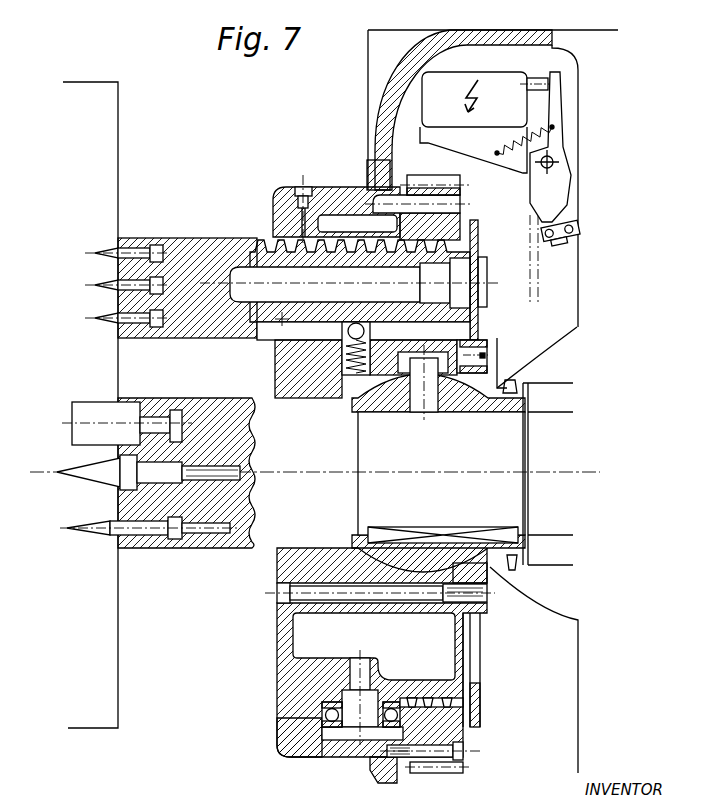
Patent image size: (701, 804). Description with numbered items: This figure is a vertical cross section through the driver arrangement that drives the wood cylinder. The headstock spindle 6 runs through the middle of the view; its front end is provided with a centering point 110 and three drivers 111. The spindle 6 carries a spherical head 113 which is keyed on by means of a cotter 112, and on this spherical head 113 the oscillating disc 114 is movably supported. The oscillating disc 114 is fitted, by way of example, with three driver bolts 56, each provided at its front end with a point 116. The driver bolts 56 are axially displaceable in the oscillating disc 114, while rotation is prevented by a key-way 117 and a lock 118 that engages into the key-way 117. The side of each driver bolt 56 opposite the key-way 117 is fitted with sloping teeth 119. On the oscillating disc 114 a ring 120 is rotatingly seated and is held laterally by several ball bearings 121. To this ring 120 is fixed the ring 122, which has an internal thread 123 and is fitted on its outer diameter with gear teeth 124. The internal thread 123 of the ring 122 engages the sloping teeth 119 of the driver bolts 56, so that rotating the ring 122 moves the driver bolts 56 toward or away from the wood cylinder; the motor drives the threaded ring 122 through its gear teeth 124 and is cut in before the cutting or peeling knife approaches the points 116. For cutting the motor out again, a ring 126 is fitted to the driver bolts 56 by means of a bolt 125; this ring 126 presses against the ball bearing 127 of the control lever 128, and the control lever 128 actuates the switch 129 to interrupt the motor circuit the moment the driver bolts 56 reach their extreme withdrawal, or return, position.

The headstock spindle 6 is at (539, 405).
The driver bolt 56 is at (201, 237).
The centering point 110 is at (80, 467).
The driver 111 is at (82, 404).
The cotter 112 is at (526, 527).
The spherical head 113 is at (478, 564).
The oscillating disc 114 is at (276, 675).
The point 116 is at (108, 250).
The key-way 117 is at (270, 333).
The lock 118 is at (333, 340).
The sloping teeth 119 is at (276, 244).
The ring 120 is at (276, 741).
The ball bearing 121 is at (328, 735).
The ring 122 is at (466, 734).
The internal thread 123 is at (466, 702).
The gear teeth 124 is at (468, 771).
The bolt 125 is at (490, 298).
The ring 126 is at (482, 225).
The ball bearing 127 is at (581, 232).
The control lever 128 is at (567, 143).
The switch 129 is at (529, 70).